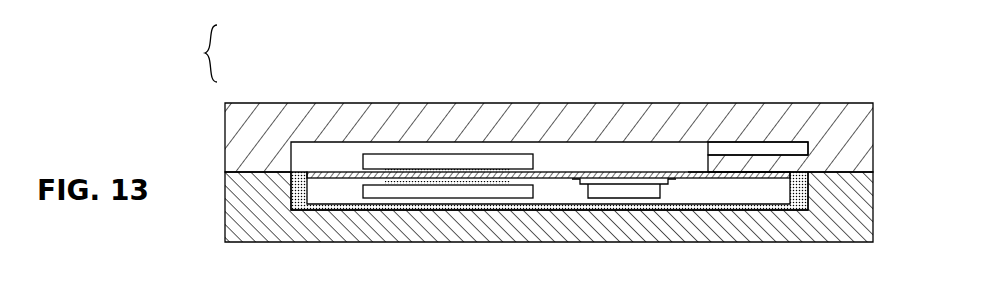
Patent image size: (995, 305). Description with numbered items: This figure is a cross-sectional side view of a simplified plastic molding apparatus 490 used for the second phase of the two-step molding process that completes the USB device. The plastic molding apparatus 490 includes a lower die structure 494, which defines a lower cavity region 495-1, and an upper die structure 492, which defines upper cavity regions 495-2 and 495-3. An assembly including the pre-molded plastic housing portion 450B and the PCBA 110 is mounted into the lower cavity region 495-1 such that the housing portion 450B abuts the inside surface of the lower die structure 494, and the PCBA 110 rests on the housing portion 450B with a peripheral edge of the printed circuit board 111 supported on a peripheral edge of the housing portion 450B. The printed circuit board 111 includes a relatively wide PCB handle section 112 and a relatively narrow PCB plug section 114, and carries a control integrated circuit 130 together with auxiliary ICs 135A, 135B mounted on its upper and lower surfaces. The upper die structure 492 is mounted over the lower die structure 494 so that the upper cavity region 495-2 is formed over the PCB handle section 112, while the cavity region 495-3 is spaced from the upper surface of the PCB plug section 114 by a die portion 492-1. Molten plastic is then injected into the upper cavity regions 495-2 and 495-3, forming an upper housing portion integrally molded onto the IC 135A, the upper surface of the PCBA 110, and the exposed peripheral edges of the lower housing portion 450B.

The plastic molding apparatus 490 is at (188, 53).
The upper die structure 492 is at (298, 98).
The lower die structure 494 is at (221, 197).
The die portion 492-1 is at (762, 152).
The lower cavity region 495-1 is at (777, 193).
The upper cavity region 495-2 is at (587, 160).
The upper cavity region 495-3 is at (753, 142).
The PCB handle section 112 is at (347, 172).
The IC 135A is at (417, 163).
The lower electrode 135B is at (420, 196).
The PCBA 110 is at (352, 190).
The printed circuit board 111 is at (547, 192).
The control integrated circuit 130 is at (622, 194).
The PCB plug section 114 is at (688, 172).
The pre-molded plastic housing portion 450B is at (675, 217).